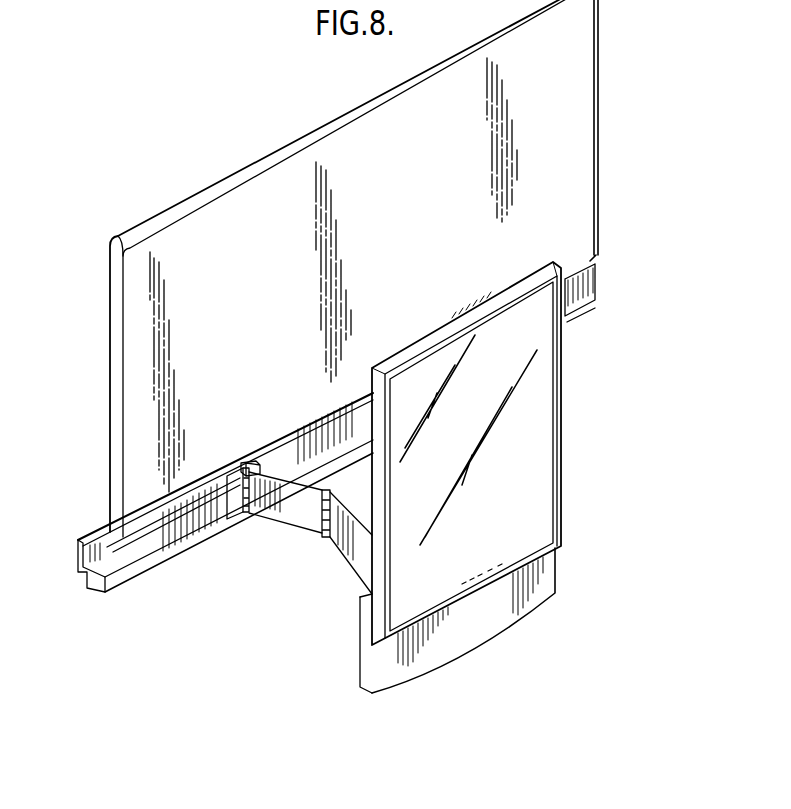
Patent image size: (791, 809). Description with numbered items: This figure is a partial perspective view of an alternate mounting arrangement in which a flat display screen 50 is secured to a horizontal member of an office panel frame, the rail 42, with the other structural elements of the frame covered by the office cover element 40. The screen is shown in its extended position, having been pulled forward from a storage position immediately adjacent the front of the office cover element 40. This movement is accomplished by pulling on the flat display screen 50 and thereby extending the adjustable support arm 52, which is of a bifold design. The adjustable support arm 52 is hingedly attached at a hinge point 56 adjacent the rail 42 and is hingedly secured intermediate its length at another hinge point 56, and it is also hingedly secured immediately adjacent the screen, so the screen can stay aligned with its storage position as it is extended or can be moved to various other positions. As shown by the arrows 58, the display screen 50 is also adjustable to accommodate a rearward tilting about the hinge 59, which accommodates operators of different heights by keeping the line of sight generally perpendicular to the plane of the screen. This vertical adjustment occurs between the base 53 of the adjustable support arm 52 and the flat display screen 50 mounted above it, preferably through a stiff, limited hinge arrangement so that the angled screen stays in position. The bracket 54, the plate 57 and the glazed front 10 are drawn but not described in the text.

The office cover element 40 is at (582, 160).
The rail 42 is at (148, 547).
The mounting bracket 54 is at (235, 537).
The hinge point 56 is at (244, 462).
The hinged plate 57 is at (288, 507).
The adjustable support arm 52 is at (333, 563).
The hinge 59 is at (361, 556).
The flat display screen 50 is at (583, 486).
The sign panel 10 is at (541, 520).
The base 53 is at (470, 628).
The arrows 58 is at (578, 387).